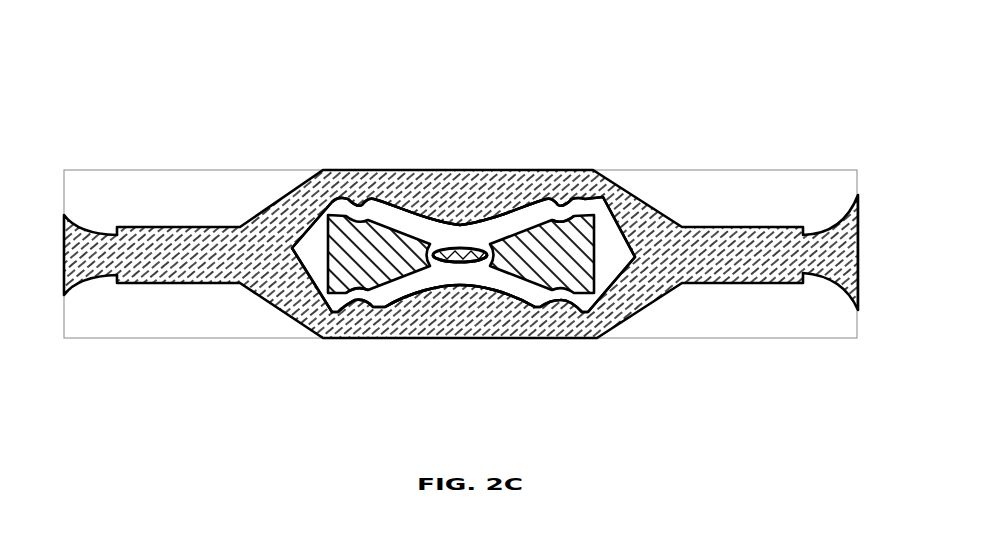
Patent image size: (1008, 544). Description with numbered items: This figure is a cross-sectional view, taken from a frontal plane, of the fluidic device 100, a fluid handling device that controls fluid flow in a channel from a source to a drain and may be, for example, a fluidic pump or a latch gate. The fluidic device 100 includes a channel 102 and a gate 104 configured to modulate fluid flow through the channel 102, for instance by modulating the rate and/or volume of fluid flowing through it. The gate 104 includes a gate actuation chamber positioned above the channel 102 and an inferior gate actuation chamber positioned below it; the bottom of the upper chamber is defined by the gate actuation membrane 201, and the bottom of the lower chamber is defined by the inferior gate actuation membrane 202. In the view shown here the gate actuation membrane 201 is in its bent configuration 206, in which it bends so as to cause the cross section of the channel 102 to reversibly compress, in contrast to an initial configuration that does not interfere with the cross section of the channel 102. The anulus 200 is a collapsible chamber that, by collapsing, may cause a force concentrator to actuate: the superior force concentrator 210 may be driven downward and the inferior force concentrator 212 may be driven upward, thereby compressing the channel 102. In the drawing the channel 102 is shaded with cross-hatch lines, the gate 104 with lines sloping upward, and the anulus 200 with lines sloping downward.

The fluidic device 100 is at (164, 166).
The channel 102 is at (455, 245).
The gate 104 is at (280, 310).
The anulus 200 is at (604, 218).
The gate actuation membrane 201 is at (537, 200).
The inferior gate actuation membrane 202 is at (457, 287).
The bent configuration 206 is at (181, 427).
The superior force concentrator 210 is at (463, 244).
The inferior force concentrator 212 is at (452, 267).